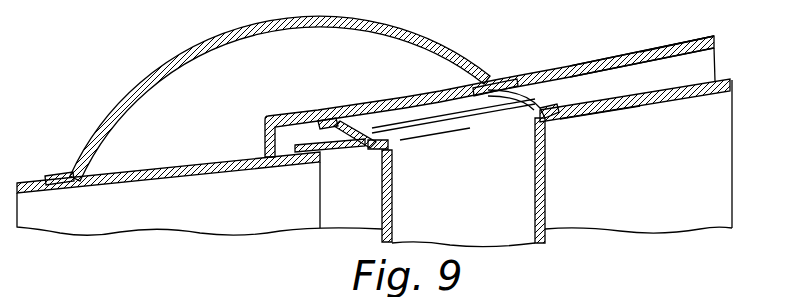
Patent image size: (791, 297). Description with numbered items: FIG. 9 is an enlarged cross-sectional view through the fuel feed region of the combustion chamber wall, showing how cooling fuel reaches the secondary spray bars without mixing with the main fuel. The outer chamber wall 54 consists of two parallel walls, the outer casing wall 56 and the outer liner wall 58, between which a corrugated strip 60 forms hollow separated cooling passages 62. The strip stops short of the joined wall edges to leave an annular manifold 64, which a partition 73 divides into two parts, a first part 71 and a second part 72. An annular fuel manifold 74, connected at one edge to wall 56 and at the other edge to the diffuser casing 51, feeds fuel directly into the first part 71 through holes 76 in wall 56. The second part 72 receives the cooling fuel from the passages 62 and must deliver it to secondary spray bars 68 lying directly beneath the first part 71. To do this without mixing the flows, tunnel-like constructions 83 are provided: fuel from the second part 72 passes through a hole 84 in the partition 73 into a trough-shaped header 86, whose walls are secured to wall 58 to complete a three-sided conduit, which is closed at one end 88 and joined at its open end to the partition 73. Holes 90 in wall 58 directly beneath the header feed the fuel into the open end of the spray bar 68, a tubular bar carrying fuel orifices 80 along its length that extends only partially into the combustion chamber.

The diffuser casing 51 is at (40, 181).
The annular fuel manifold 74 is at (193, 70).
The holes 76 is at (298, 113).
The tunnel-like constructions 83 is at (370, 94).
The annular manifold 64 is at (461, 64).
The partition 73 is at (540, 107).
The cooling passages 62 is at (601, 72).
The outer casing wall 56 is at (677, 48).
The corrugated strip 60 is at (720, 78).
The outer liner wall 58 is at (660, 100).
The outer chamber wall 54 is at (607, 123).
The manifold part 72 is at (573, 98).
The hole 84 is at (508, 88).
The holes 90 is at (467, 106).
The header 86 is at (440, 112).
The manifold part 71 is at (405, 120).
The closed end 88 is at (352, 136).
The fuel orifices 80 is at (537, 220).
The secondary fuel spray bars 68 is at (553, 196).